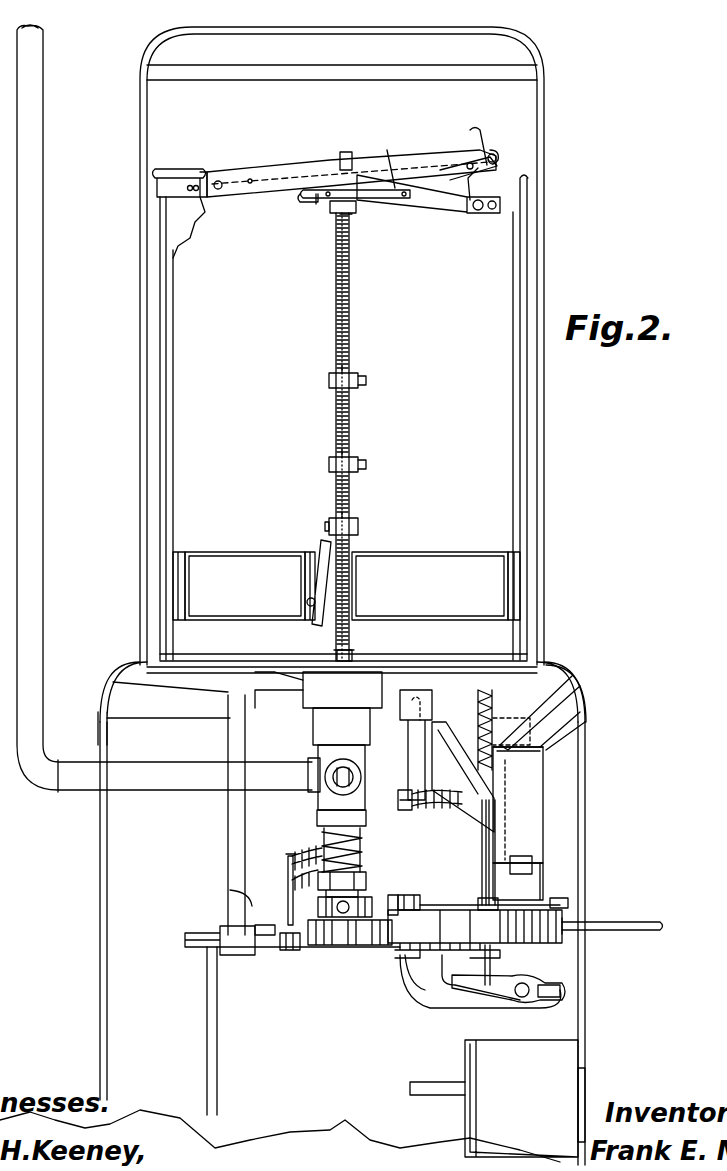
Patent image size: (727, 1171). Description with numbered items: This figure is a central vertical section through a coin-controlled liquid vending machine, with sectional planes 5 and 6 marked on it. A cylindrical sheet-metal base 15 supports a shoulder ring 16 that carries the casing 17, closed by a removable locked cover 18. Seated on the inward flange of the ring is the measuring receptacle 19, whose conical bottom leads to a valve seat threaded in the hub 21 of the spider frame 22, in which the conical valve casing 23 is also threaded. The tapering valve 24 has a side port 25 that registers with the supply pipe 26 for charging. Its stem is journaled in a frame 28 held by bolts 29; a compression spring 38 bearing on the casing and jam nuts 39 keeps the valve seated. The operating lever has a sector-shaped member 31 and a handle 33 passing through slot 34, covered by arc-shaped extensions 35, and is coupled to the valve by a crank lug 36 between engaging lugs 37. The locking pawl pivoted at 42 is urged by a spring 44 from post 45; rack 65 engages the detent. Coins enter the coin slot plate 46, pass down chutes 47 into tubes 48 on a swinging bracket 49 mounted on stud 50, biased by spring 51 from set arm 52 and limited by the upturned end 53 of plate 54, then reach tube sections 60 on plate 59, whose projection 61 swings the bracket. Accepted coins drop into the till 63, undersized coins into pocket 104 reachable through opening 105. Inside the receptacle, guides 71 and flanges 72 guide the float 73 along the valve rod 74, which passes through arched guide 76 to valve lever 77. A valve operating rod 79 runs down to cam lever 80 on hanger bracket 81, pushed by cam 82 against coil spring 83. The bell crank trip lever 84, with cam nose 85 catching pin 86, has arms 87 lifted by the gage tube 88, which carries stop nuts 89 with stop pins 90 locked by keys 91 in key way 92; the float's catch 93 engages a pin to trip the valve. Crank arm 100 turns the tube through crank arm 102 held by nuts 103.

The sectional line 5— 5 is at (140, 115).
The sectional line 6— 6 is at (97, 862).
The base 15 is at (100, 1025).
The shoulder ring 16 is at (118, 678).
The casing 17 is at (160, 518).
The cover 18 is at (520, 48).
The measuring tank or receptacle 19 is at (160, 222).
The hub 21 is at (312, 700).
The spider frame 22 is at (290, 700).
The conical valve casing 23 is at (313, 750).
The tapering valve 24 is at (360, 770).
The vertical slot or port 25 is at (340, 768).
The supply pipe 26 is at (172, 788).
The frame 28 is at (300, 947).
The bolts 29 is at (228, 858).
The sector-shaped member 31 is at (380, 945).
The handle member 33 is at (638, 928).
The horizontal slot 34 is at (580, 918).
The arc-shaped extensions 35 is at (415, 950).
The crank lug 36 is at (392, 896).
The engaging lugs 37 is at (420, 896).
The coil compression spring 38 is at (362, 842).
The jam nuts 39 is at (366, 880).
The pivot 42 is at (482, 838).
The spring 44 is at (316, 886).
The post 45 is at (288, 890).
The coin slot plate 46 is at (586, 712).
The inclined chutes 47 is at (552, 742).
The vertical connecting tubes 48 is at (543, 806).
The swinging bracket 49 is at (475, 818).
The stud 50 is at (408, 768).
The spring 51 is at (455, 780).
The adjustable set arm 52 is at (406, 802).
The upturned end 53 is at (532, 712).
The plate 54 is at (540, 752).
The plate 59 is at (568, 894).
The tube sections 60 is at (543, 882).
The projection 61 is at (532, 858).
The till or money receptacle 63 is at (436, 1092).
The arc-shaped rack 65 is at (230, 889).
The guides 71 is at (173, 500).
The flanges 72 is at (185, 556).
The float 73 is at (418, 552).
The valve rod 74 is at (346, 152).
The arched guide 76 is at (334, 652).
The valve lever 77 is at (262, 192).
The valve operating rod 79 is at (492, 702).
The cam lever 80 is at (480, 994).
The hanger bracket 81 is at (428, 996).
The cam 82 is at (454, 992).
The coil spring 83 is at (514, 731).
The bell crank trip lever 84 is at (460, 210).
The tapering cam nose 85 is at (470, 150).
The pin 86 is at (465, 164).
The arms 87 is at (314, 204).
The gage tube 88 is at (349, 318).
The stop nuts 89 is at (329, 378).
The stop pins 90 is at (374, 376).
The keys 91 is at (340, 366).
The key way 92 is at (336, 275).
The spring pressed catch 93 is at (322, 544).
The crank arm 100 is at (397, 161).
The crank arm 102 is at (377, 200).
The nuts 103 is at (332, 213).
The receptacle or pocket 104 is at (526, 1050).
The opening 105 is at (585, 1080).